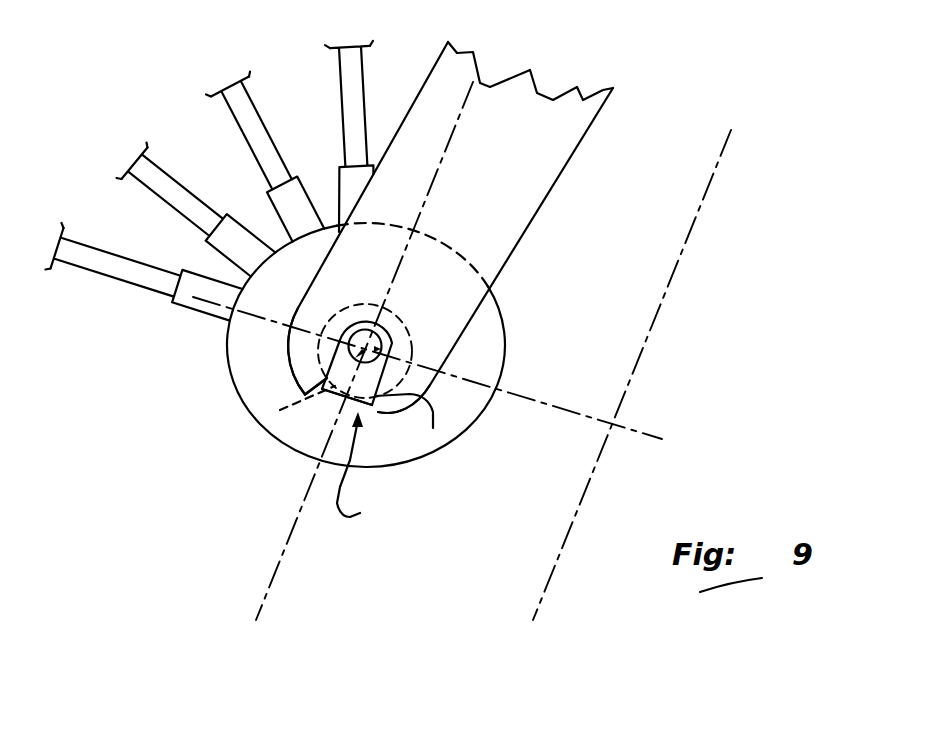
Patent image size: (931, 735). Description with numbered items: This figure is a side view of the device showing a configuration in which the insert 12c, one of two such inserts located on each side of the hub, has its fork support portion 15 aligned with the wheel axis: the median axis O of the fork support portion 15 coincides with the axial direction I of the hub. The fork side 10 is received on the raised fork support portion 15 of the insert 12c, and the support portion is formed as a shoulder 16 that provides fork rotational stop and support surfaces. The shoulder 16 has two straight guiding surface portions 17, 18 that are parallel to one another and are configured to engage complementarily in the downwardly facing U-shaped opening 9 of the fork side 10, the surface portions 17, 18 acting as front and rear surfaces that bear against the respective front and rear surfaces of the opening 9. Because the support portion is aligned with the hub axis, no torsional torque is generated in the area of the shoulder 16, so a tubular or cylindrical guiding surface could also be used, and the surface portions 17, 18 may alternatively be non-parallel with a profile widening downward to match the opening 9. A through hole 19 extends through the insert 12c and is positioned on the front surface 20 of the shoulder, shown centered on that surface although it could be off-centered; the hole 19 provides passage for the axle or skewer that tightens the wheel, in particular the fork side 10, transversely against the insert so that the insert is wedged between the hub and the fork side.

The fork side 10 is at (518, 187).
The hole 19 is at (396, 343).
The insert 12c is at (404, 345).
The straight surface portion 17 is at (325, 380).
The front surface 20 is at (336, 394).
The shoulder 16 is at (346, 408).
The fork support portion 15 is at (370, 471).
The U-shaped opening 9 is at (380, 412).
The straight surface portion 18 is at (433, 428).